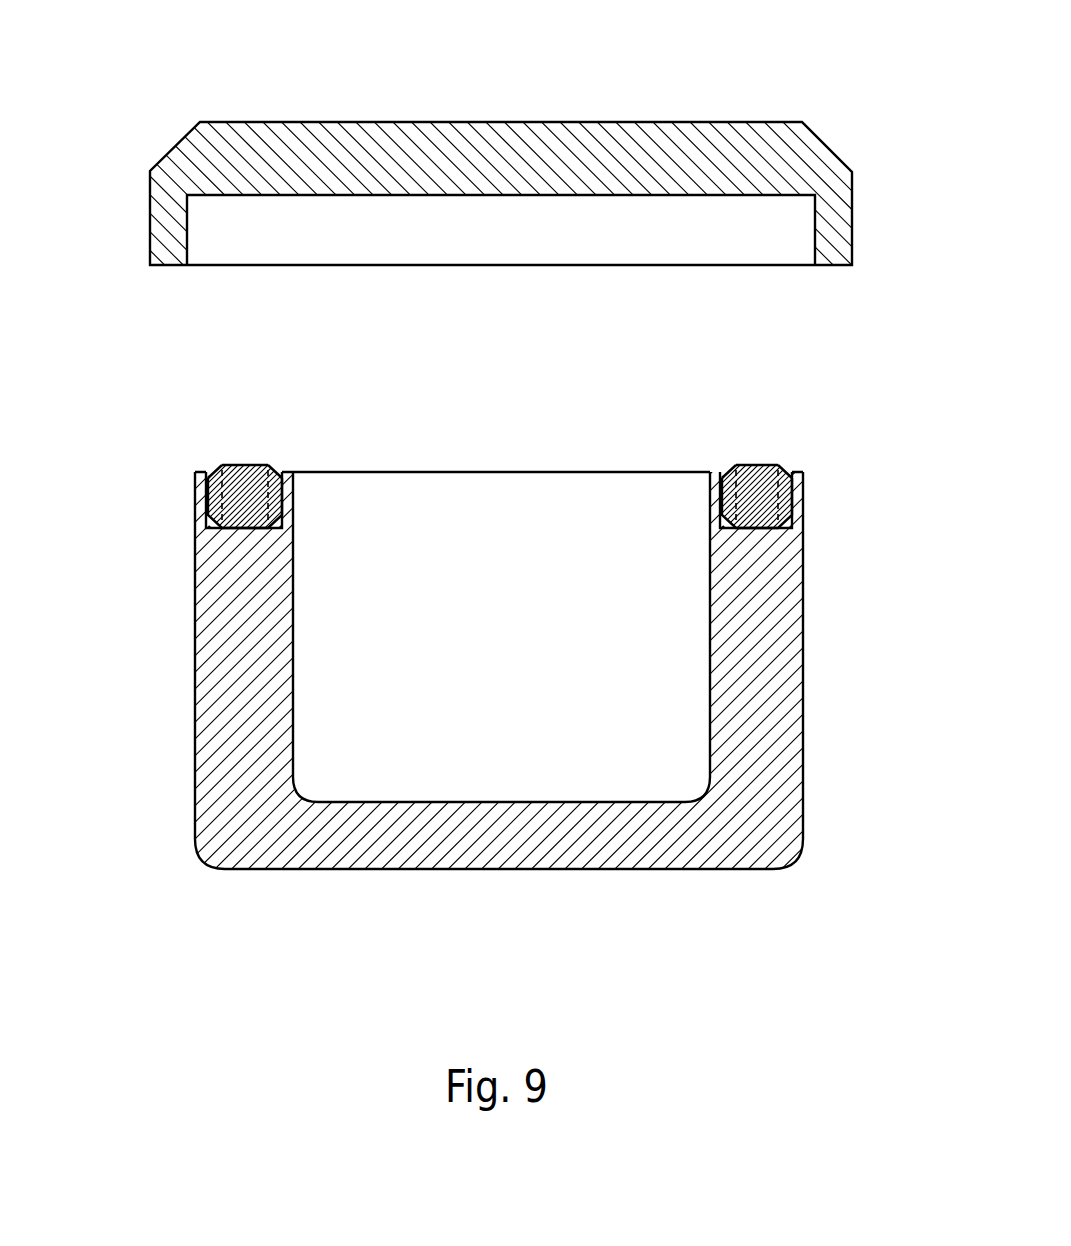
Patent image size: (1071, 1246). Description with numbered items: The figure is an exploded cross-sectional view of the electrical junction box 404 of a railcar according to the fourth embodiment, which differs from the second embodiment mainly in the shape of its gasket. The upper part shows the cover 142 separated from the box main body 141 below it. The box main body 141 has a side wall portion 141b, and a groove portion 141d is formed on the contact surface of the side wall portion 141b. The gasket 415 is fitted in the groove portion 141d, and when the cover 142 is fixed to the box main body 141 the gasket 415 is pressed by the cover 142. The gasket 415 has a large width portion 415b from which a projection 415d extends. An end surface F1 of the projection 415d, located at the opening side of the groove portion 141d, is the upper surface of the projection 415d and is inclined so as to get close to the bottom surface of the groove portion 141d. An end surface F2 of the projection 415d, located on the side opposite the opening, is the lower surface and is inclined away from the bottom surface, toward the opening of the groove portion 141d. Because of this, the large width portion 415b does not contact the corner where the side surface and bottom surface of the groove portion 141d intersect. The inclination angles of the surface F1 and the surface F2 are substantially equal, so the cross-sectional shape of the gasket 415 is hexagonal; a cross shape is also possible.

The electrical junction box 404 is at (501, 141).
The cover 142 is at (762, 133).
The box main body 141 is at (535, 669).
The side wall portion 141b is at (793, 633).
The groove portion 141d is at (282, 497).
The gasket 415 is at (501, 437).
The large width portion 415b is at (499, 496).
The projection 415d is at (213, 472).
The end surface F1 is at (217, 473).
The end surface F2 is at (210, 530).